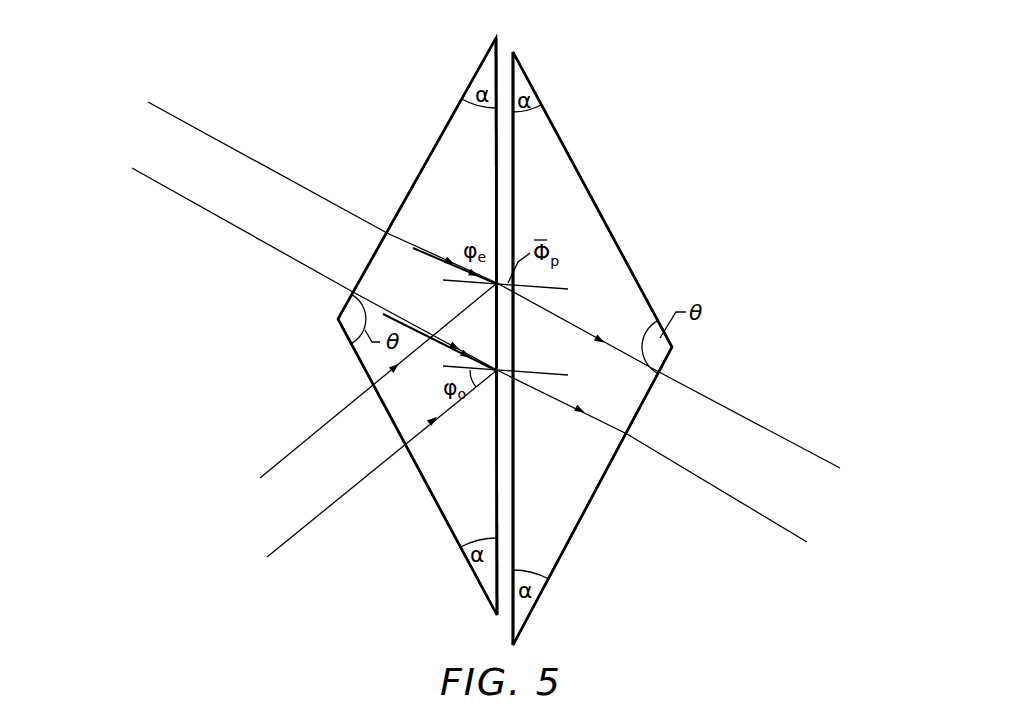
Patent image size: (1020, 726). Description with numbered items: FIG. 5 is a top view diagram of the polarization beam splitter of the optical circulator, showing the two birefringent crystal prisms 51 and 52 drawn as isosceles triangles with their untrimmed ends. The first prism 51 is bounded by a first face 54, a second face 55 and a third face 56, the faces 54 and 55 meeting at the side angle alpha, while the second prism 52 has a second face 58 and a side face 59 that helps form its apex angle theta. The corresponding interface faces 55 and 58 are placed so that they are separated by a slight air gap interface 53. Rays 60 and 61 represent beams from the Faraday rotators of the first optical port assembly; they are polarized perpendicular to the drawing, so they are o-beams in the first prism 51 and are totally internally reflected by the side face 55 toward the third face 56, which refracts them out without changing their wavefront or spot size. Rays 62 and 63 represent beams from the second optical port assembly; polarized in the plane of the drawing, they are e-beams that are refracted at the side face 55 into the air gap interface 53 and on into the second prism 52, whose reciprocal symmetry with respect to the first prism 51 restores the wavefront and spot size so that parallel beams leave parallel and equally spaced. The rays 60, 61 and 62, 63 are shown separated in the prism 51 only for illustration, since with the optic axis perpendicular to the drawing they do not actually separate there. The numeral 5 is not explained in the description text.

The exit face of second prism 5 is at (592, 496).
The first birefringent crystal prism 51 is at (417, 326).
The second birefringent crystal prism 52 is at (592, 348).
The air gap interface 53 is at (531, 341).
The first face of the first prism 54 is at (417, 467).
The second face of the first prism 55 is at (472, 326).
The third face of the first prism 56 is at (417, 178).
The second face of the second prism 58 is at (537, 348).
The side face of the second prism 59 is at (592, 199).
The ray 60 is at (382, 463).
The ray 61 is at (378, 380).
The ray 62 is at (469, 355).
The ray 63 is at (494, 285).